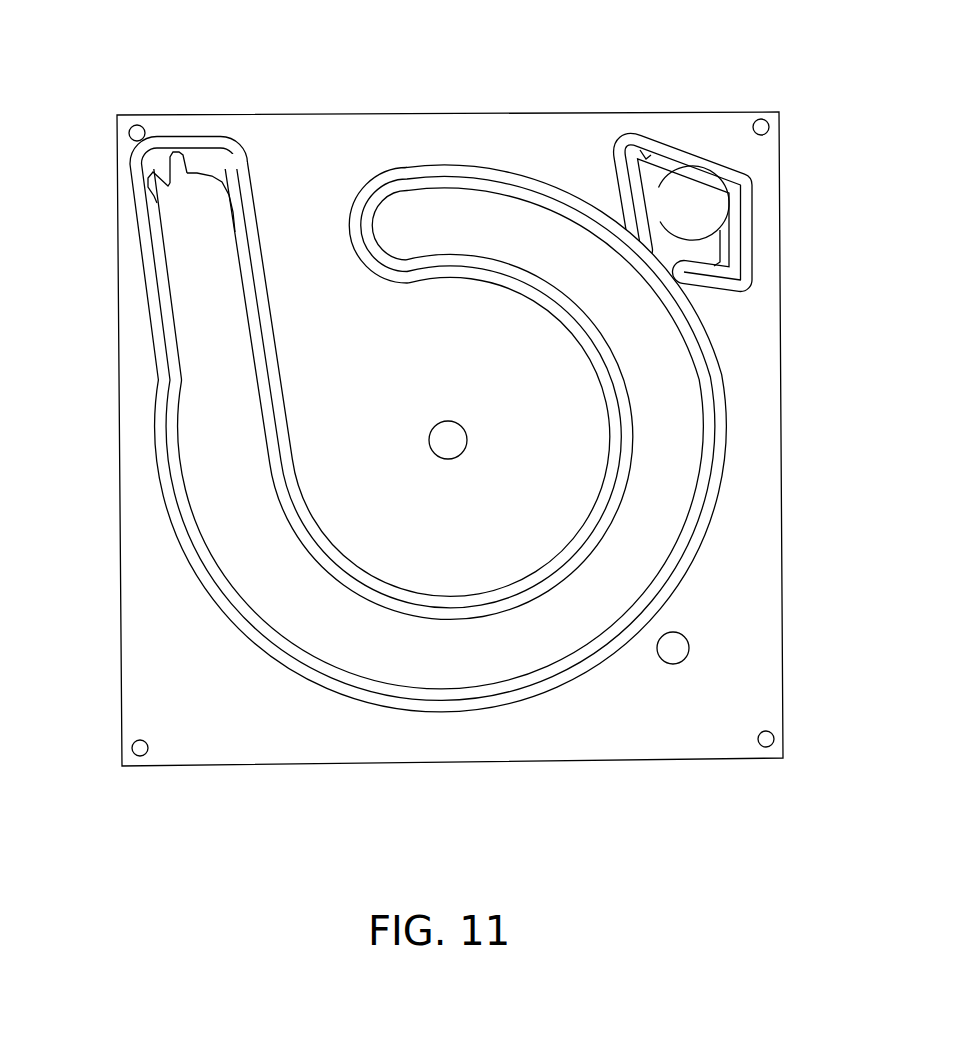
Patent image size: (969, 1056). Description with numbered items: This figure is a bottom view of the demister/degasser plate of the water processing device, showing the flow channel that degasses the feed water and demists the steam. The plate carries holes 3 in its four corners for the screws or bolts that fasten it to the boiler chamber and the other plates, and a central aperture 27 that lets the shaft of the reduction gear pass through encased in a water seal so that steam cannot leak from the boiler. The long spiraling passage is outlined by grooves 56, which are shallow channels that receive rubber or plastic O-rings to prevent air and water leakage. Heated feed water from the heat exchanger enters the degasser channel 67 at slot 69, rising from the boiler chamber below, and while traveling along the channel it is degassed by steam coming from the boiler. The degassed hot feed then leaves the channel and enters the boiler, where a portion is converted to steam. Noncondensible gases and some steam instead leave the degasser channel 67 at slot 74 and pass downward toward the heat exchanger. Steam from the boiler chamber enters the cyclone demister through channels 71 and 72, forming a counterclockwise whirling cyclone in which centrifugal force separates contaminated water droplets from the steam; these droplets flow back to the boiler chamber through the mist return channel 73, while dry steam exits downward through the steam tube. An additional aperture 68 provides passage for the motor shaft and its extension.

The holes 3 is at (134, 125).
The aperture 27 is at (450, 448).
The grooves 56 is at (718, 430).
The degasser channel 67 is at (662, 520).
The aperture 68 is at (677, 657).
The slot 69 is at (178, 152).
The channel 71 is at (726, 276).
The channel 72 is at (648, 158).
The mist return channel 73 is at (753, 215).
The slot 74 is at (148, 177).